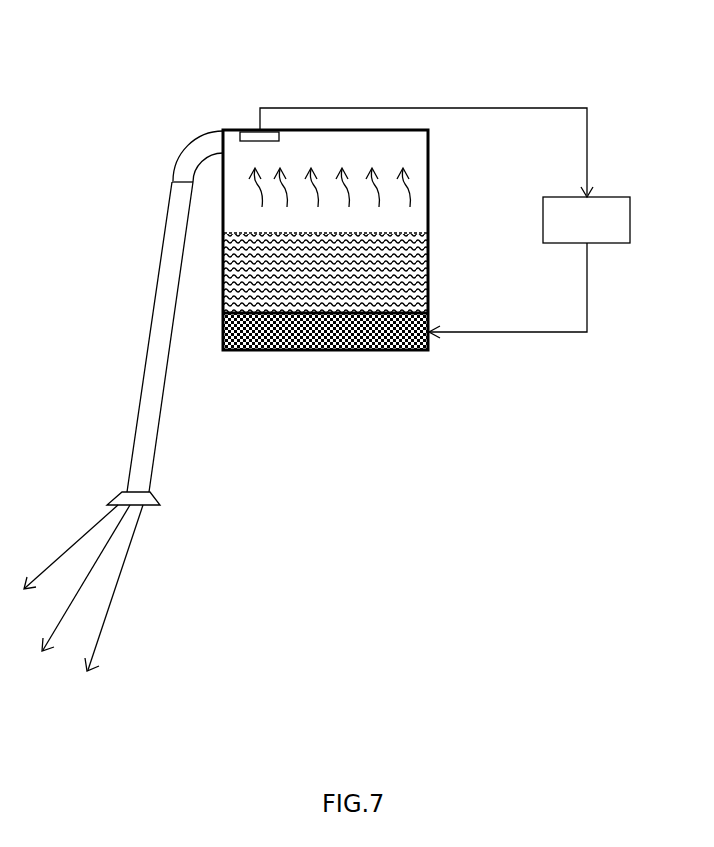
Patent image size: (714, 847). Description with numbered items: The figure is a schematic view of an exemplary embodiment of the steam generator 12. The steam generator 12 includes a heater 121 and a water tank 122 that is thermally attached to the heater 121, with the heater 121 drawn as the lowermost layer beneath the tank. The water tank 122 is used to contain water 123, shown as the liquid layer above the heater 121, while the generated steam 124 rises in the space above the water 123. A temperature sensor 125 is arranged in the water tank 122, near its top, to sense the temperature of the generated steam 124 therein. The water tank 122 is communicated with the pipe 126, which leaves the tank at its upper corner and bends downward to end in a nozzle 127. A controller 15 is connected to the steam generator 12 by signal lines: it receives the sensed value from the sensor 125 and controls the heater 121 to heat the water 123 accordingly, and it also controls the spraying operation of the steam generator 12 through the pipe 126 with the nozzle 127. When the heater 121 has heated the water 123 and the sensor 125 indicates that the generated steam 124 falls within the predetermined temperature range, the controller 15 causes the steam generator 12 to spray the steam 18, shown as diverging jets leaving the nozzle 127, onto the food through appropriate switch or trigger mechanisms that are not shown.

The steam generator 12 is at (322, 103).
The controller 15 is at (630, 215).
The steam 18 is at (128, 575).
The heater 121 is at (318, 350).
The water tank 122 is at (428, 292).
The water 123 is at (428, 252).
The generated steam 124 is at (428, 185).
The temperature sensor 125 is at (253, 131).
The pipe 126 is at (176, 220).
The nozzle 127 is at (120, 492).